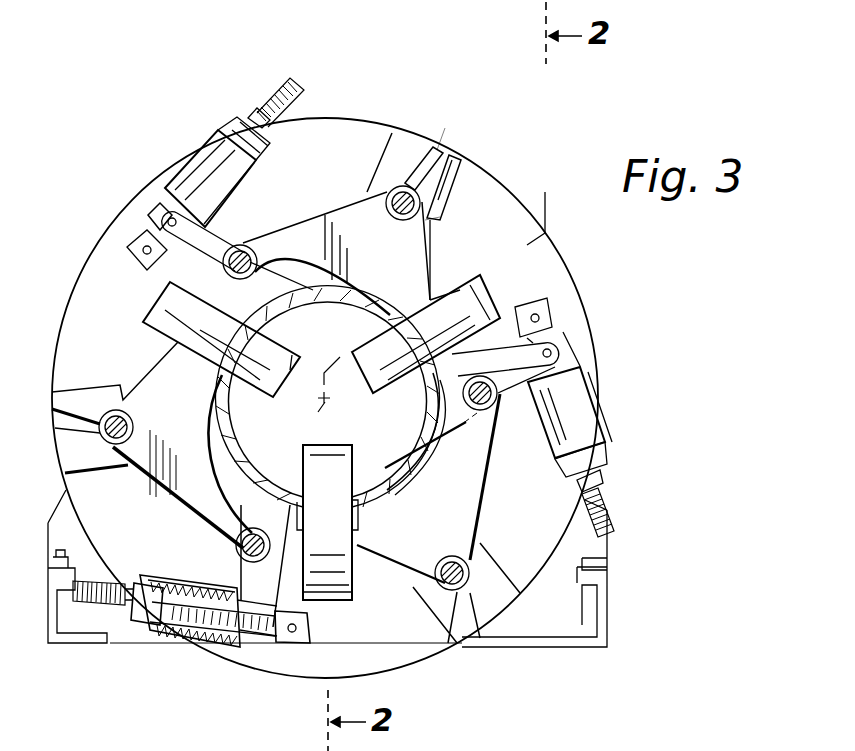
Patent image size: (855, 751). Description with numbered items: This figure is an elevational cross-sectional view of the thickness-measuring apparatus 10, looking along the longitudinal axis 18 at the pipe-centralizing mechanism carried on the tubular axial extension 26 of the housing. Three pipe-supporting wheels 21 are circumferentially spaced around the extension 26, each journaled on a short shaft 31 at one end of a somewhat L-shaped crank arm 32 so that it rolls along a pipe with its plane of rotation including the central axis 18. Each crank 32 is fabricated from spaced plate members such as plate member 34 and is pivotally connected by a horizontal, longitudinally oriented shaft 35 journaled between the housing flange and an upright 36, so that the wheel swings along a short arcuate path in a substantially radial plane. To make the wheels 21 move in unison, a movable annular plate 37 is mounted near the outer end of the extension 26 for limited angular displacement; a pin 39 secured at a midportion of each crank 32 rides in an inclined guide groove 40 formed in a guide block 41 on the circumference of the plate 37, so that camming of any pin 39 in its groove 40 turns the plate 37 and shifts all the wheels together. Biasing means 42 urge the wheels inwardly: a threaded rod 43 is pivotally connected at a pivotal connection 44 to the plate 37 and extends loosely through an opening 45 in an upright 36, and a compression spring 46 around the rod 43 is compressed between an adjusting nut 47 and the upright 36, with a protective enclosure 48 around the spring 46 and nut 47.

The thickness-measuring apparatus 10 is at (157, 146).
The longitudinal axis 18 is at (313, 388).
The pipe-supporting wheels 21 is at (460, 292).
The tubular axial extension 26 is at (252, 470).
The short shaft 31 is at (452, 380).
The crank arm 32 is at (297, 207).
The plate member 34 is at (392, 246).
The shaft 35 is at (240, 245).
The upright 36 is at (190, 248).
The movable annular plate 37 is at (333, 127).
The pin 39 is at (435, 215).
The guide groove 40 is at (448, 153).
The guide block 41 is at (405, 150).
The biasing means 42 is at (623, 418).
The threaded rod 43 is at (120, 608).
The pivotal connection 44 is at (292, 640).
The opening 45 is at (265, 640).
The compression spring 46 is at (218, 647).
The adjusting nut 47 is at (139, 582).
The protective enclosure 48 is at (172, 577).